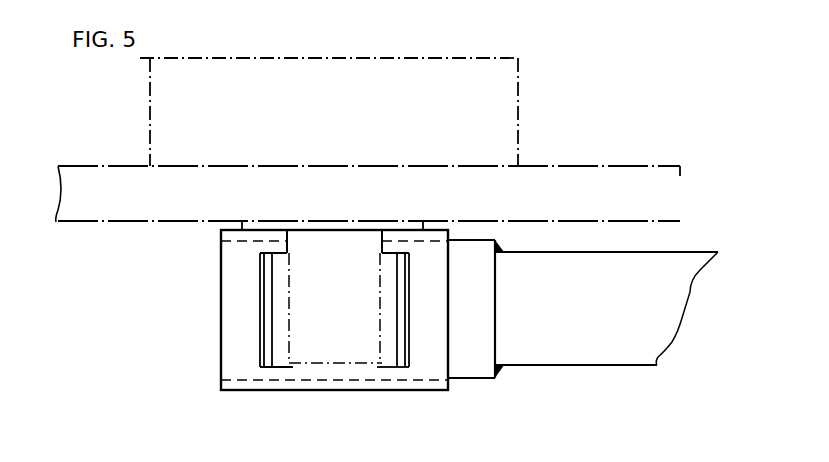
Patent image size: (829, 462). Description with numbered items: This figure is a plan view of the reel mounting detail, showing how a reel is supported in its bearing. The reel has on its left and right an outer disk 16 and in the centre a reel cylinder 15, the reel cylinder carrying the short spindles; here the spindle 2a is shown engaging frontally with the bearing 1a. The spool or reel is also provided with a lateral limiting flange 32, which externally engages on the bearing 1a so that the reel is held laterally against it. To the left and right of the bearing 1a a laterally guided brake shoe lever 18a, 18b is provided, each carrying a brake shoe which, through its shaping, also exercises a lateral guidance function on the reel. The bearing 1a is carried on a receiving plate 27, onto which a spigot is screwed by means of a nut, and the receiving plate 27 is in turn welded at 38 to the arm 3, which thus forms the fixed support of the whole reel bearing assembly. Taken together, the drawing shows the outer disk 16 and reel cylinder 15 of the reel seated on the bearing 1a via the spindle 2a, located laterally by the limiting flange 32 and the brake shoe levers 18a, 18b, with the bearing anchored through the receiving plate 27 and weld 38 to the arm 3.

The reel cylinder 15 is at (503, 118).
The outer disk 16 is at (606, 178).
The lateral limiting flange 32 is at (262, 226).
The brake shoe lever 18a is at (278, 316).
The spindle 2a is at (304, 356).
The brake shoe lever 18b is at (391, 357).
The bearing 1a is at (434, 367).
The receiving plate 27 is at (473, 365).
The weld 38 is at (500, 372).
The arm 3 is at (600, 355).